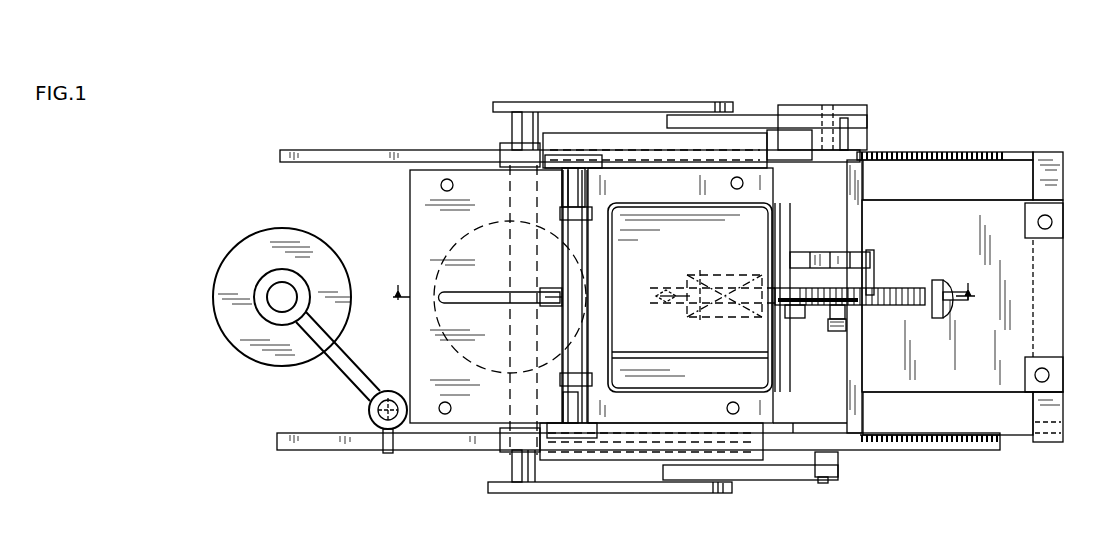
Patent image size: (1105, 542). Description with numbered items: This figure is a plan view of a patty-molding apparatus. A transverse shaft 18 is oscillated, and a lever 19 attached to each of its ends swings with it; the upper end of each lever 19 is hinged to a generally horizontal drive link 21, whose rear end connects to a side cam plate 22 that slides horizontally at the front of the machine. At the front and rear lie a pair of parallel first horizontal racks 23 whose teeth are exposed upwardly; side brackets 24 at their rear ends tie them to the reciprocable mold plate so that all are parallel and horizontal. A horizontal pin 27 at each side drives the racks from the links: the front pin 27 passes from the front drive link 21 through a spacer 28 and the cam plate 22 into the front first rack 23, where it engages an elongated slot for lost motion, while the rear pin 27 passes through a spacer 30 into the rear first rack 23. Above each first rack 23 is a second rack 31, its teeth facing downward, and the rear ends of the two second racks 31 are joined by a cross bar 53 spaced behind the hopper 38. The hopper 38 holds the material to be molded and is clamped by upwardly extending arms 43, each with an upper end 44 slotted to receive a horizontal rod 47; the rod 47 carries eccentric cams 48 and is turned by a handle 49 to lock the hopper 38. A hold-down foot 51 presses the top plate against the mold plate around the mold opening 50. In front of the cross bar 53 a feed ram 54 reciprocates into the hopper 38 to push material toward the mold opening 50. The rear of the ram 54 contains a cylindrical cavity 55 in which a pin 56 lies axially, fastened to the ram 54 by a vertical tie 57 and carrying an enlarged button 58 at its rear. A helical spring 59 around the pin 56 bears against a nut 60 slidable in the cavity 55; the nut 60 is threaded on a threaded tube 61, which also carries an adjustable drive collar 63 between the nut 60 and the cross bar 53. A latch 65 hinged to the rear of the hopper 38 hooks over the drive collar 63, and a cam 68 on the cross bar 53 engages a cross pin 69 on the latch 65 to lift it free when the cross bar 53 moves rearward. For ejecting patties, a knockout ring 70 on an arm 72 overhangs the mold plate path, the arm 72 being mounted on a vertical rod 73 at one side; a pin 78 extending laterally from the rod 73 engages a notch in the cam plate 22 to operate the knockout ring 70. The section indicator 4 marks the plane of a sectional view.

The section line 4 is at (682, 280).
The shaft 18 is at (510, 130).
The lever 19 is at (640, 103).
The drive link 21 is at (754, 124).
The side cam plate 22 is at (423, 452).
The first horizontal rack 23 is at (930, 152).
The side bracket 24 is at (1060, 190).
The horizontal pin 27 is at (840, 116).
The spacer 28 is at (846, 476).
The spacer 30 is at (808, 144).
The second rack 31 is at (850, 154).
The hopper 38 is at (647, 197).
The arm 43 is at (560, 155).
The upper end 44 is at (658, 159).
The horizontal rod 47 is at (574, 318).
The cam 48 is at (560, 212).
The handle 49 is at (538, 288).
The mold opening 50 is at (480, 230).
The hold-down foot 51 is at (470, 304).
The cross bar 53 is at (866, 370).
The feed ram 54 is at (686, 240).
The cylindrical cavity 55 is at (710, 275).
The pin 56 is at (678, 288).
The vertical tie 57 is at (664, 306).
The button 58 is at (946, 302).
The helical spring 59 is at (704, 322).
The nut 60 is at (796, 318).
The threaded tube 61 is at (902, 308).
The drive collar 63 is at (848, 310).
The latch 65 is at (836, 330).
The cam 68 is at (810, 252).
The cross pin 69 is at (878, 270).
The knockout ring 70 is at (248, 250).
The arm 72 is at (330, 342).
The vertical rod 73 is at (398, 408).
The pin 78 is at (385, 454).